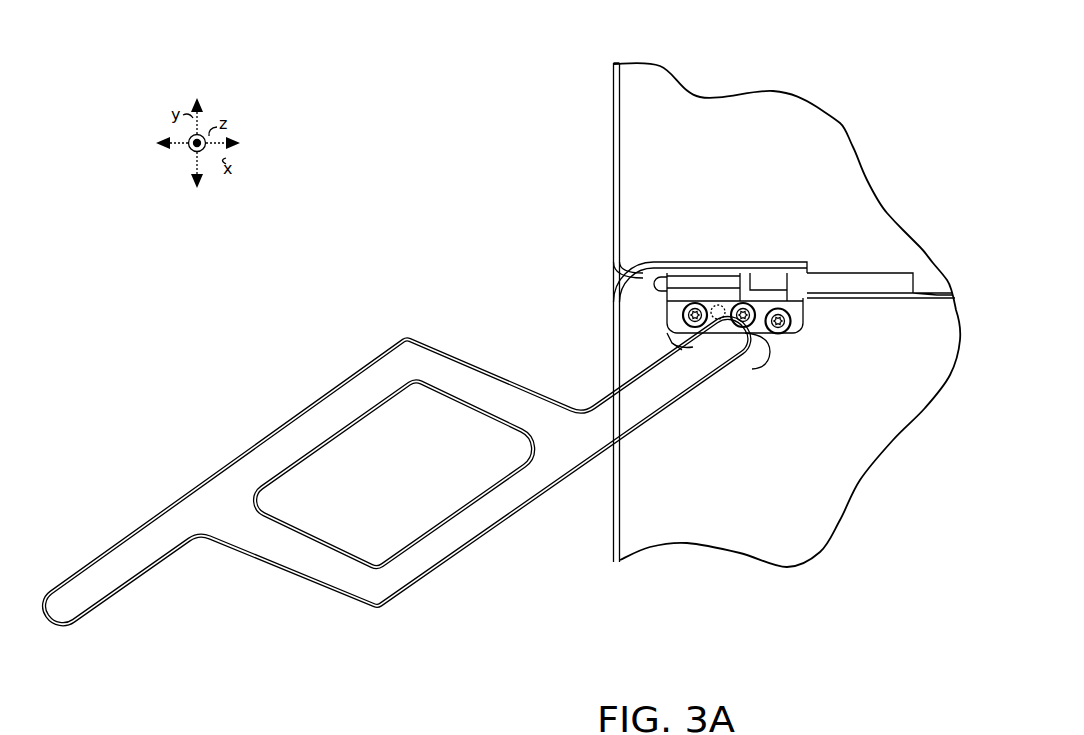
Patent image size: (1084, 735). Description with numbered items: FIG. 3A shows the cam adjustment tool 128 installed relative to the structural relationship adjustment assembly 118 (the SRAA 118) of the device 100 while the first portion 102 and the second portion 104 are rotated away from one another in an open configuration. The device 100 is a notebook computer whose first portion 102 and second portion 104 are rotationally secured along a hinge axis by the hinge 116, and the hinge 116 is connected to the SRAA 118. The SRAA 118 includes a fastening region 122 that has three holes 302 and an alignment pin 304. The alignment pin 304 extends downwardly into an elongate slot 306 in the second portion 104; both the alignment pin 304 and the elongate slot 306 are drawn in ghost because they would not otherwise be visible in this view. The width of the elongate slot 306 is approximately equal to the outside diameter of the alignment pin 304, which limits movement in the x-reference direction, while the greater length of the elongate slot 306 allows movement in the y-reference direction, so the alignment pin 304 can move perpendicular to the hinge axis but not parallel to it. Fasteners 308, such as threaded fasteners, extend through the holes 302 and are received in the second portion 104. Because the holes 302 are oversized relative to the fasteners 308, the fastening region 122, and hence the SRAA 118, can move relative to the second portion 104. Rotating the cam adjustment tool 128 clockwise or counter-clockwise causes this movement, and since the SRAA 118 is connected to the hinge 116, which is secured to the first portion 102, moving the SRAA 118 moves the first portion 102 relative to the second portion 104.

The device 100 is at (514, 51).
The first portion 102 is at (790, 82).
The second portion 104 is at (766, 540).
The hinge 116 is at (692, 290).
The structural relationship adjustment assembly 118 is at (581, 322).
The fastening region 122 is at (662, 314).
The cam adjustment tool 128 is at (88, 624).
The holes 302 is at (776, 308).
The alignment pin 304 is at (720, 321).
The elongate slot 306 is at (669, 342).
The fasteners 308 is at (755, 335).